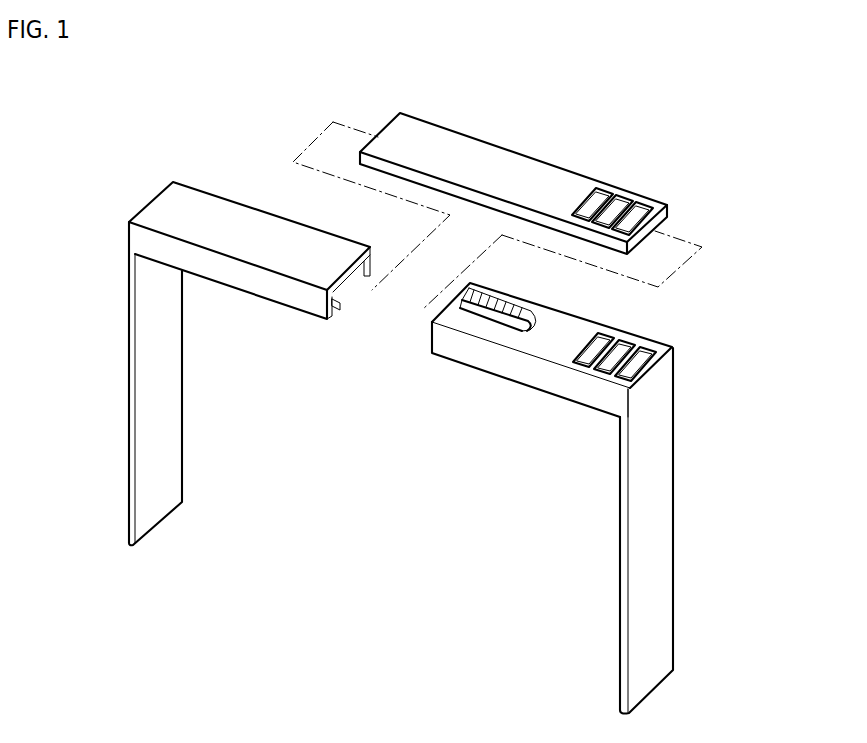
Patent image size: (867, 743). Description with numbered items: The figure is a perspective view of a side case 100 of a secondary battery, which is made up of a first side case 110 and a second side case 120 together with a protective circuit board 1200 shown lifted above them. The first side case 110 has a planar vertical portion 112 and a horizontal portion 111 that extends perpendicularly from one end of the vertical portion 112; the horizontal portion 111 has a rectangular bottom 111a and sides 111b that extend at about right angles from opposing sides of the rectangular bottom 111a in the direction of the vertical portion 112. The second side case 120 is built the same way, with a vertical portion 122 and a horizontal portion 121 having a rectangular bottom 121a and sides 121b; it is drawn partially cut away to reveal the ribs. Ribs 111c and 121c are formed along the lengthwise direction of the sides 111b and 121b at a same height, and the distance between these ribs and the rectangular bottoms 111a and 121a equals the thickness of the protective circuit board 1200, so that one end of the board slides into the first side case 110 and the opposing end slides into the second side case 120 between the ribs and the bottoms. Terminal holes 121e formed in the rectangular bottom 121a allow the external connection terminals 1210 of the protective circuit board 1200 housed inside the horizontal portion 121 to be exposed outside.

The side case 100 is at (775, 202).
The first side case 110 is at (118, 372).
The horizontal portion 111 is at (360, 358).
The rectangular bottom 111a is at (255, 255).
The sides 111b is at (290, 294).
The ribs 111c is at (336, 298).
The vertical portion 112 is at (128, 485).
The second side case 120 is at (696, 458).
The horizontal portion 121 is at (572, 474).
The rectangular bottom 121a is at (462, 328).
The sides 121b is at (527, 376).
The ribs 121c is at (495, 318).
The terminal holes 121e is at (630, 372).
The vertical portion 122 is at (662, 592).
The protective circuit board 1200 is at (465, 158).
The external connection terminals 1210 is at (600, 193).